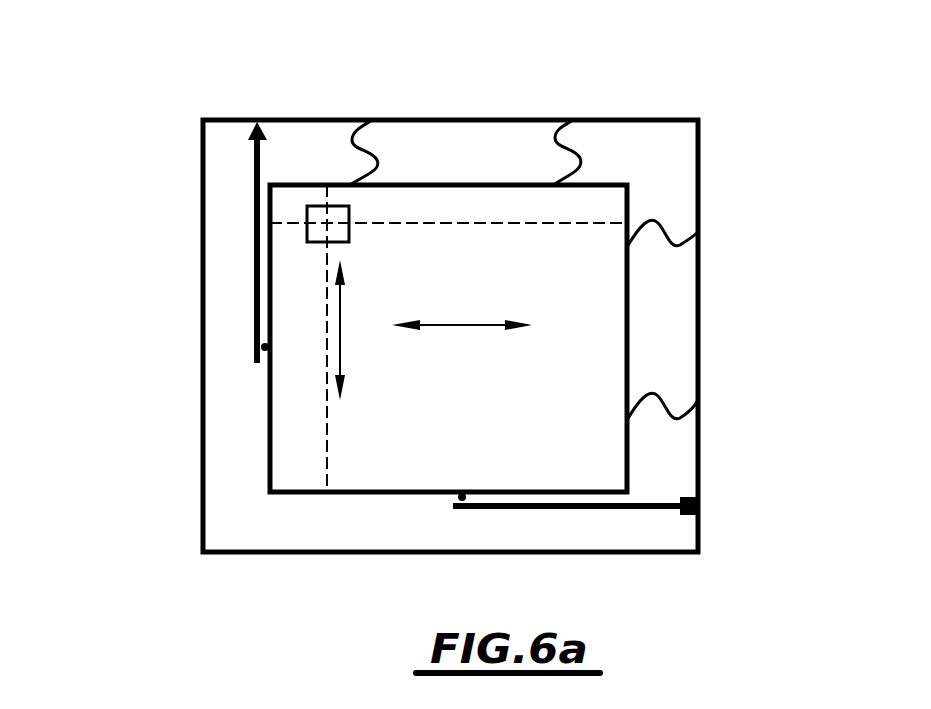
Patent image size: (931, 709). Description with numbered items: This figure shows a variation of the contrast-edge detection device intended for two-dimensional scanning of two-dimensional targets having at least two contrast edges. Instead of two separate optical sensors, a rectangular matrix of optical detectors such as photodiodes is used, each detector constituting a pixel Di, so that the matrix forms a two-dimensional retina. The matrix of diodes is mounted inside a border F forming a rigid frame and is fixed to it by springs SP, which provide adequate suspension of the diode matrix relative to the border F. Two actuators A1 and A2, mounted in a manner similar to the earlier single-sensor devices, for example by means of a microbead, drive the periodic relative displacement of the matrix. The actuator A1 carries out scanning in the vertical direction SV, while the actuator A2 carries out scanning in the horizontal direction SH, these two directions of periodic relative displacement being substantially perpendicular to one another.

The border F is at (203, 327).
The actuator A1 is at (254, 240).
The actuator A2 is at (587, 512).
The pixel Di is at (315, 212).
The springs SP is at (380, 158).
The horizontal direction SH is at (460, 325).
The vertical direction SV is at (340, 350).